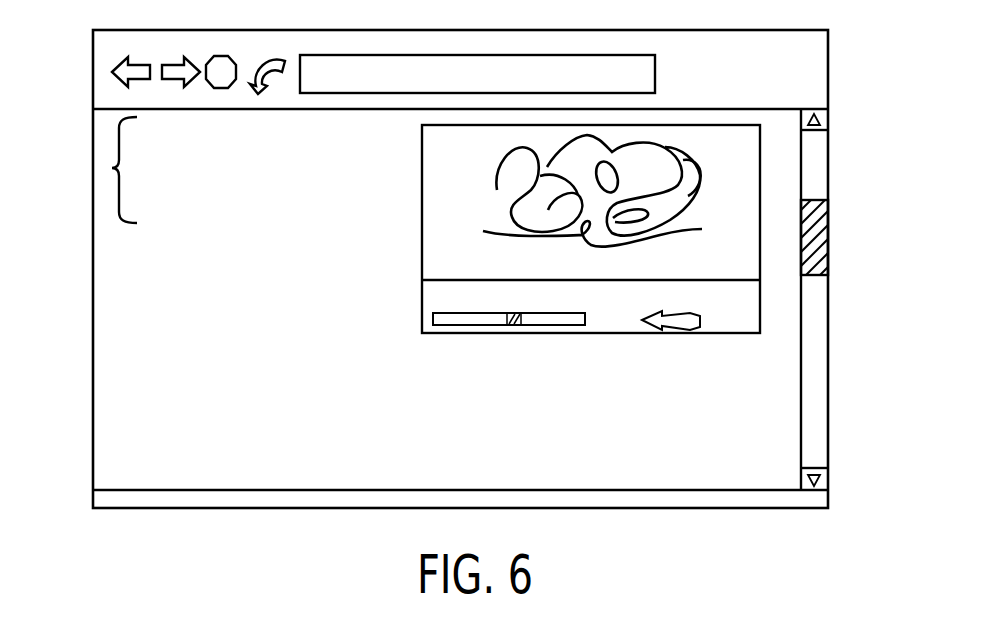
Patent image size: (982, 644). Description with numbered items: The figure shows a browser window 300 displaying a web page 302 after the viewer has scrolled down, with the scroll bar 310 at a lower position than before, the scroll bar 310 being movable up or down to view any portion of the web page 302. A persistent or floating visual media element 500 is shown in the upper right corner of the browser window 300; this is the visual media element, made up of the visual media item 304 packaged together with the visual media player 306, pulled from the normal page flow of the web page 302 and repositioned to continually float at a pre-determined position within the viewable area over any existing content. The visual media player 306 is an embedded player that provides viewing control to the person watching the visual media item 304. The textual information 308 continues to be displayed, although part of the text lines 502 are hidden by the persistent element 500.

The browser window 300 is at (240, 508).
The web page 302 is at (127, 452).
The visual media item 304 is at (699, 144).
The visual media player 306 is at (748, 319).
The textual information 308 is at (130, 358).
The scroll bar 310 is at (823, 243).
The persistent or floating visual media element 500 is at (725, 145).
The text lines 502 is at (112, 168).